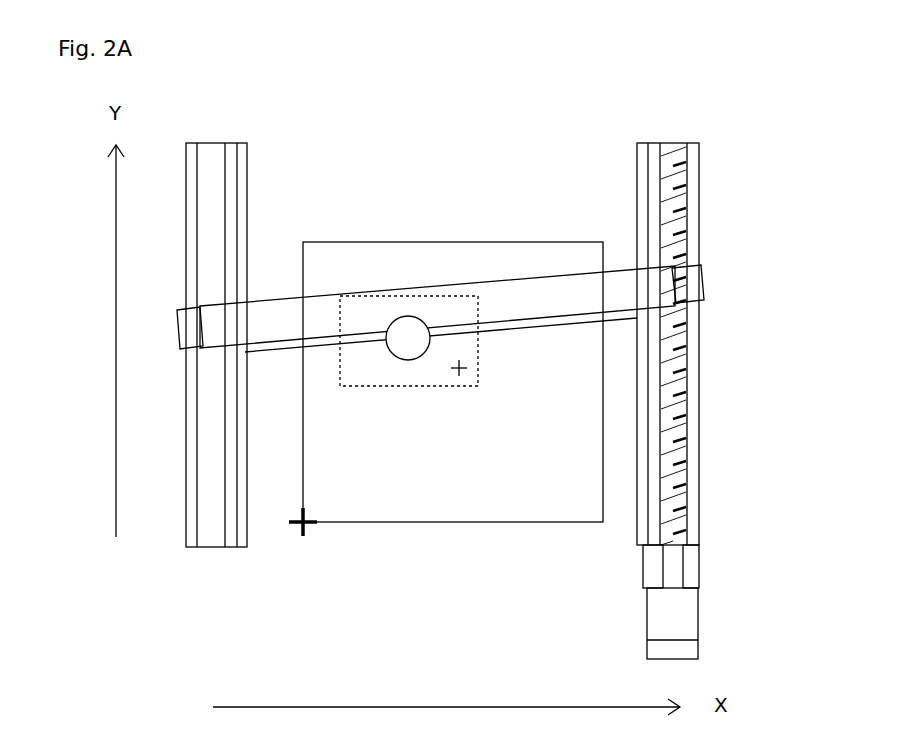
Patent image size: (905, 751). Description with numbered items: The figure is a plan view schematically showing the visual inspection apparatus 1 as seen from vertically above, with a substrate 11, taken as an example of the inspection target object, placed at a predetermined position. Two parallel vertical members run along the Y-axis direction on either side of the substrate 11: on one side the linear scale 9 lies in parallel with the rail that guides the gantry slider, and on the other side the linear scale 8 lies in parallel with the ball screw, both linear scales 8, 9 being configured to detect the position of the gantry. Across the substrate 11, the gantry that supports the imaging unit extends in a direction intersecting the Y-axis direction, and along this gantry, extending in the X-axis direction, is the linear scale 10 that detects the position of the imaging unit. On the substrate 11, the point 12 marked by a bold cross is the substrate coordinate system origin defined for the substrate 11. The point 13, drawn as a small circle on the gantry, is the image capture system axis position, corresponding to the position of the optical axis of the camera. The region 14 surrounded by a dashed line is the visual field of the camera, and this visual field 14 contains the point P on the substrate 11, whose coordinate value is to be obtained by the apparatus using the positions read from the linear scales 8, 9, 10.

The visual inspection apparatus 1 is at (594, 143).
The linear scale 8 is at (643, 223).
The linear scale 9 is at (244, 186).
The linear scale 10 is at (612, 312).
The substrate 11 is at (502, 522).
The substrate coordinate system origin 12 is at (305, 548).
The image capture system axis position 13 is at (407, 335).
The visual field 14 is at (445, 296).
The point P is at (460, 387).